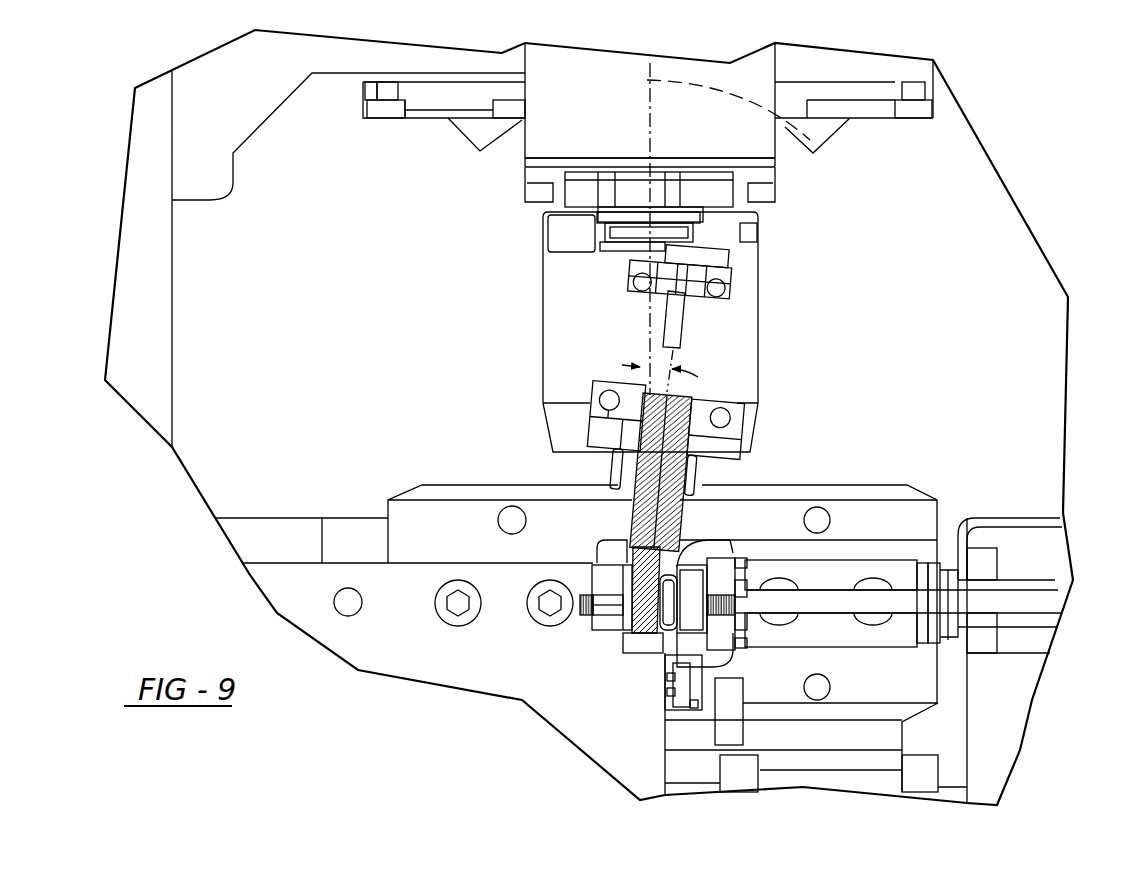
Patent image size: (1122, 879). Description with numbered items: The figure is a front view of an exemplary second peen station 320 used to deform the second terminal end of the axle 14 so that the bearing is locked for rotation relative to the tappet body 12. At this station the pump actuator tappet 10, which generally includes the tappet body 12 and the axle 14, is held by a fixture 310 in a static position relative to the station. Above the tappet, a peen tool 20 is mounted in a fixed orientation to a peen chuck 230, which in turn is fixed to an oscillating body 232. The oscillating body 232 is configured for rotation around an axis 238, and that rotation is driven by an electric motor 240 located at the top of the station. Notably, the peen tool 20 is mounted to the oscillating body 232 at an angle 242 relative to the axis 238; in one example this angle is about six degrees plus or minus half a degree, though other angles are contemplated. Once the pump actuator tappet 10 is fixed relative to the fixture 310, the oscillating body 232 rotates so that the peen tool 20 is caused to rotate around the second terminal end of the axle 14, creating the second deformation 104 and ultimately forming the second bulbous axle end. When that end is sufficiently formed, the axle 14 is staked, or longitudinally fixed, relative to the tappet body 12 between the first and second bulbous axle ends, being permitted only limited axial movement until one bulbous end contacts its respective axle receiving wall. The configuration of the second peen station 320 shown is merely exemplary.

The pump actuator tappet 10 is at (614, 640).
The tappet body 12 is at (662, 568).
The axle 14 is at (653, 620).
The peen tool 20 is at (660, 460).
The second deformation 104 is at (626, 562).
The peen chuck 230 is at (632, 468).
The oscillating body 232 is at (733, 322).
The axis 238 is at (813, 146).
The electric motor 240 is at (550, 123).
The angle 242 is at (622, 362).
The fixture 310 is at (699, 553).
The second peen station 320 is at (958, 266).